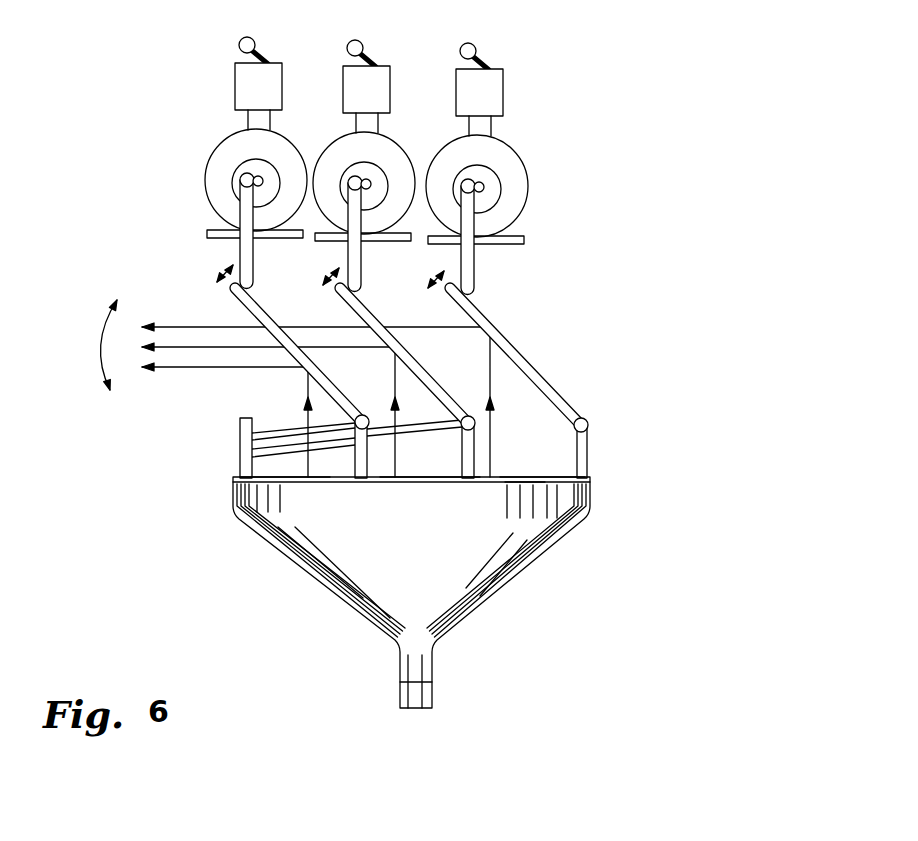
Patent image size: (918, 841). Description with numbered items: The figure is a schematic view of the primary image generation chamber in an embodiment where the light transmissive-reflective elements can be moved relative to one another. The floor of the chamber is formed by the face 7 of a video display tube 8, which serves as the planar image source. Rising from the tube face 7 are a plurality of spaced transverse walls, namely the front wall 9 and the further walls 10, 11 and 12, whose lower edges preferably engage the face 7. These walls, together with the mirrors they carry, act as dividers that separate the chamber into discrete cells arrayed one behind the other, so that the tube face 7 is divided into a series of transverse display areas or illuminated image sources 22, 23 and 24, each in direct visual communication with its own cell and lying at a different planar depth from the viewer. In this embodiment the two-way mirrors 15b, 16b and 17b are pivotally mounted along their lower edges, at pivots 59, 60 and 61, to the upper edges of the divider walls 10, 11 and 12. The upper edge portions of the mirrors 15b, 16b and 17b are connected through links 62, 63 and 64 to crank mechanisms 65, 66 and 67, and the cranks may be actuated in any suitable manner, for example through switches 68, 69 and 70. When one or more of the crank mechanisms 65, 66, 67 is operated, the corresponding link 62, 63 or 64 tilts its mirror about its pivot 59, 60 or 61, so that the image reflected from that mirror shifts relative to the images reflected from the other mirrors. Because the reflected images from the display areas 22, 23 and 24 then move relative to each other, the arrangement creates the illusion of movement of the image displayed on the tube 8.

The tube face 7 is at (524, 478).
The video display tube 8 is at (320, 587).
The front wall 9 is at (240, 450).
The transverse wall 10 is at (368, 457).
The transverse wall 11 is at (475, 450).
The transverse wall 12 is at (588, 452).
The two-way mirror 15b is at (258, 322).
The two-way mirror 16b is at (367, 322).
The two-way mirror 17b is at (512, 343).
The display area 22 is at (285, 473).
The display area 23 is at (437, 473).
The display area 24 is at (545, 478).
The pivot 59 is at (368, 417).
The pivot 60 is at (472, 418).
The pivot 61 is at (586, 421).
The link 62 is at (242, 257).
The link 63 is at (360, 270).
The link 64 is at (473, 272).
The crank mechanism 65 is at (220, 145).
The crank mechanism 66 is at (343, 135).
The crank mechanism 67 is at (449, 138).
The switch 68 is at (270, 99).
The switch 69 is at (378, 102).
The switch 70 is at (491, 105).